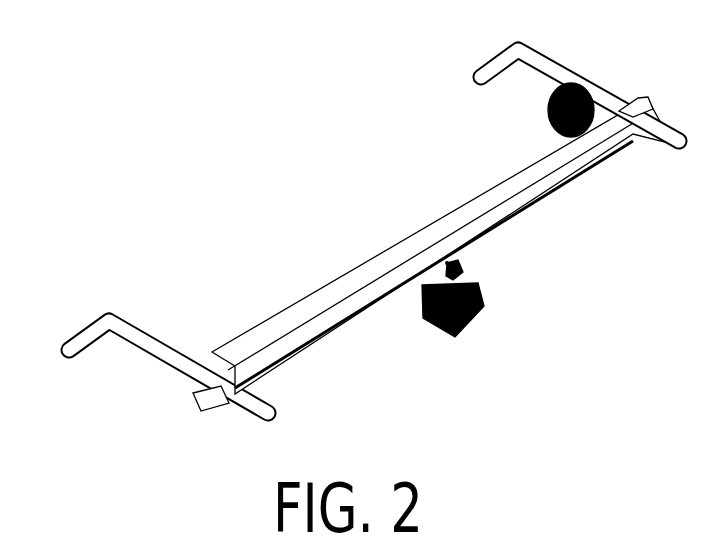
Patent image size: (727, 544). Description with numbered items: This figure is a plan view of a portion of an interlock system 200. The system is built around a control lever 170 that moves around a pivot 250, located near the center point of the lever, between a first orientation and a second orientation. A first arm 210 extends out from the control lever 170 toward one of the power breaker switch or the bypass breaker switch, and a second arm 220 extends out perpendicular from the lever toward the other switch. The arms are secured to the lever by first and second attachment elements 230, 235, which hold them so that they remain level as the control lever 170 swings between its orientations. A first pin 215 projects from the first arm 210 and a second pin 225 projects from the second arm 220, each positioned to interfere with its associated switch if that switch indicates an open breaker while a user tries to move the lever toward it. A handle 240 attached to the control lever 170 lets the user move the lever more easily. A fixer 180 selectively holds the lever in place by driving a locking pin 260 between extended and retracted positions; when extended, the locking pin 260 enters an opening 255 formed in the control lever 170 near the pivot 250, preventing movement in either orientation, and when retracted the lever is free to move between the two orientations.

The interlock system 200 is at (128, 100).
The control lever 170 is at (365, 258).
The fixer 180 is at (483, 296).
The first arm 210 is at (546, 53).
The first pin 215 is at (492, 64).
The second arm 220 is at (146, 333).
The second pin 225 is at (81, 334).
The first attachment element 230 is at (620, 93).
The second attachment element 235 is at (195, 386).
The handle 240 is at (547, 103).
The pivot 250 is at (417, 230).
The opening 255 is at (466, 265).
The locking pin 260 is at (447, 262).